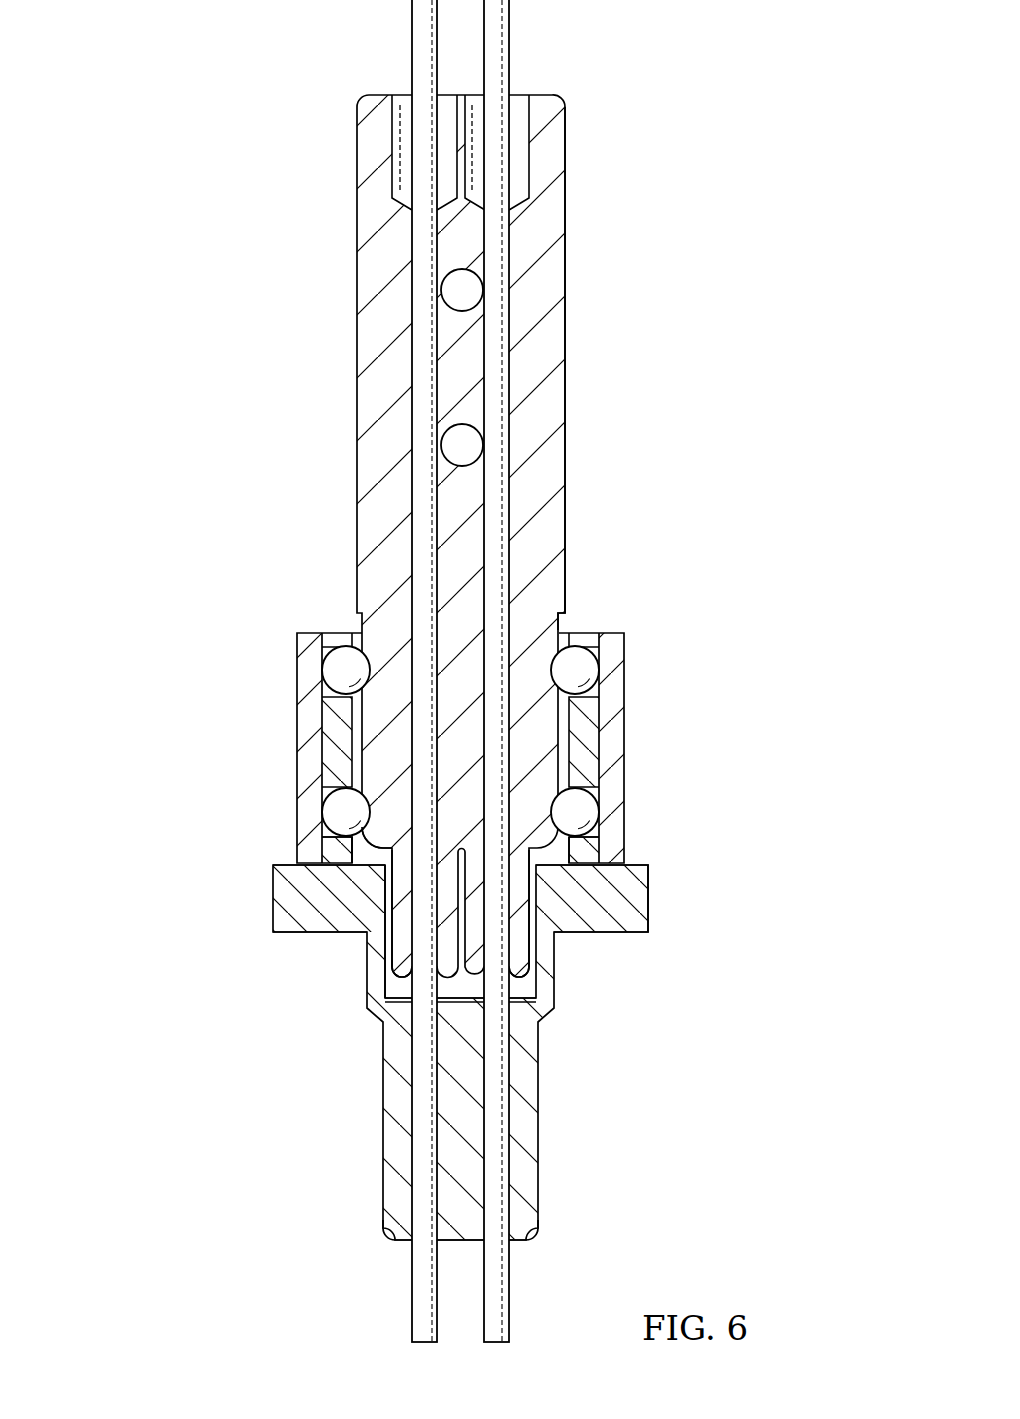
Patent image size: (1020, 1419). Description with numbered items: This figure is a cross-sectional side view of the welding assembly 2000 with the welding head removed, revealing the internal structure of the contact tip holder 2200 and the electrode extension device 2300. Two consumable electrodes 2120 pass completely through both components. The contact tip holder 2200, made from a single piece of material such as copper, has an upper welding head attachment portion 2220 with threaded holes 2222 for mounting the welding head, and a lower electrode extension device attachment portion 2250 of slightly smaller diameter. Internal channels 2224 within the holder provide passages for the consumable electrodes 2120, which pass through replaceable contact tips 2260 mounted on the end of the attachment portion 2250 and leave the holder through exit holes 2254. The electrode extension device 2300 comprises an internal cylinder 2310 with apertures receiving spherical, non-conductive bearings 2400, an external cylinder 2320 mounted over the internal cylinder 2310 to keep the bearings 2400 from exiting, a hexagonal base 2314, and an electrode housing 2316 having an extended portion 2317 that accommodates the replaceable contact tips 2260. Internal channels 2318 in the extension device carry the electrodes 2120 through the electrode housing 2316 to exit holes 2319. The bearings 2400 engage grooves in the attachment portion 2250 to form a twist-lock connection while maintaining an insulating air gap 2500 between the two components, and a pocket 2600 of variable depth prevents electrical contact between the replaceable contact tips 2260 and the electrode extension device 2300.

The welding assembly 2000 is at (170, 170).
The consumable electrodes 2120 is at (412, 42).
The contact tip holder 2200 is at (356, 345).
The welding head attachment portion 2220 is at (566, 394).
The threaded holes 2222 is at (483, 290).
The internal channels 2224 is at (402, 177).
The electrode extension device attachment portion 2250 is at (561, 622).
The exit holes 2254 is at (536, 998).
The replaceable contact tips 2260 is at (403, 948).
The electrode extension device 2300 is at (297, 722).
The internal cylinder 2310 is at (334, 633).
The hexagonal base 2314 is at (652, 898).
The electrode housing 2316 is at (540, 1137).
The extended portion 2317 is at (372, 982).
The internal channels 2318 is at (502, 1098).
The exit holes 2319 is at (408, 1243).
The external cylinder 2320 is at (310, 835).
The bearings 2400 is at (336, 669).
The insulating air gap 2500 is at (368, 858).
The pocket 2600 is at (462, 995).